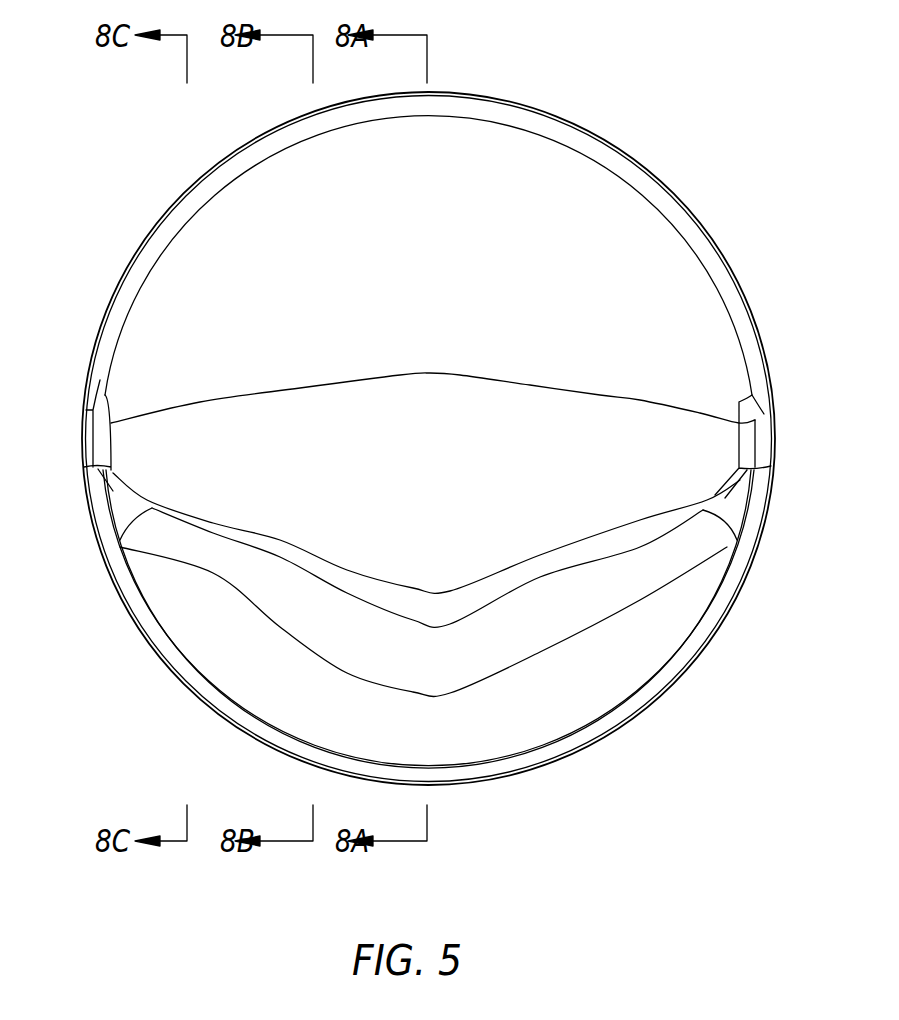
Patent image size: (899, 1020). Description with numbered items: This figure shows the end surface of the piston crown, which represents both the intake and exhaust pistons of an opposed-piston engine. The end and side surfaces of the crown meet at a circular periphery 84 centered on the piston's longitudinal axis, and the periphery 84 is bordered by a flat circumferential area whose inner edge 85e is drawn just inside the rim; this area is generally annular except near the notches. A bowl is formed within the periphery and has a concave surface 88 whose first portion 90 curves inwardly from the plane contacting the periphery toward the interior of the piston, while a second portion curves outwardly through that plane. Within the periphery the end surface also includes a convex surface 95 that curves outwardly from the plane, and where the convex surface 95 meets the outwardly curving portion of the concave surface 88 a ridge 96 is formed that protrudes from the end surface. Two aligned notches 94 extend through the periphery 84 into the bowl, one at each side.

The periphery 84 is at (678, 197).
The inner edge of the flat circumferential area 85e is at (625, 178).
The concave surface 88 is at (643, 418).
The first portion 90 is at (497, 148).
The notches 94 is at (763, 442).
The convex surface 95 is at (580, 690).
The ridge 96 is at (585, 597).